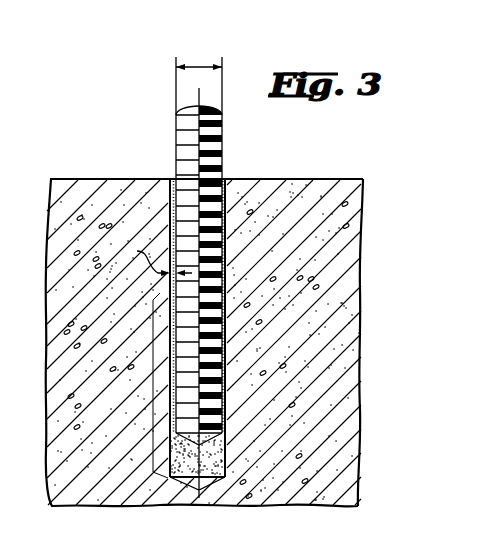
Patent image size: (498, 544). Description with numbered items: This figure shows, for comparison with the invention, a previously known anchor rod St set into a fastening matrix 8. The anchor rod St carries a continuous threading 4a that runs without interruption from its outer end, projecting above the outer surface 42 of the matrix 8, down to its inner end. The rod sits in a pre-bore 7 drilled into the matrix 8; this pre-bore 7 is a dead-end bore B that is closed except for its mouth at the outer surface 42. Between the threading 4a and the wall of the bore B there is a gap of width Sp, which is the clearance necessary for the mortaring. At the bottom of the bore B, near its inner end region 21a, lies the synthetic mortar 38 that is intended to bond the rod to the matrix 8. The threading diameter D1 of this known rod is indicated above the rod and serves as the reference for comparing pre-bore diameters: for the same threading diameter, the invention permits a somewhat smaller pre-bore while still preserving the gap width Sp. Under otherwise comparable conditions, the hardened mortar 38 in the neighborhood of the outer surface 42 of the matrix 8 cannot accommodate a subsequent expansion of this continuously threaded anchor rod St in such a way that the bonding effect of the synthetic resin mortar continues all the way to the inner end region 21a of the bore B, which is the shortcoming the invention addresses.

The fastening matrix 8 is at (330, 190).
The outer surface of the matrix 42 is at (100, 179).
The continuous threading 4a is at (194, 266).
The anchor rod St is at (173, 131).
The pre-bore 7 is at (226, 254).
The threading diameter D1 is at (200, 60).
The gap width Sp is at (170, 306).
The inner end region of the bore 21a is at (158, 386).
The bore B is at (228, 433).
The synthetic mortar 38 is at (221, 459).